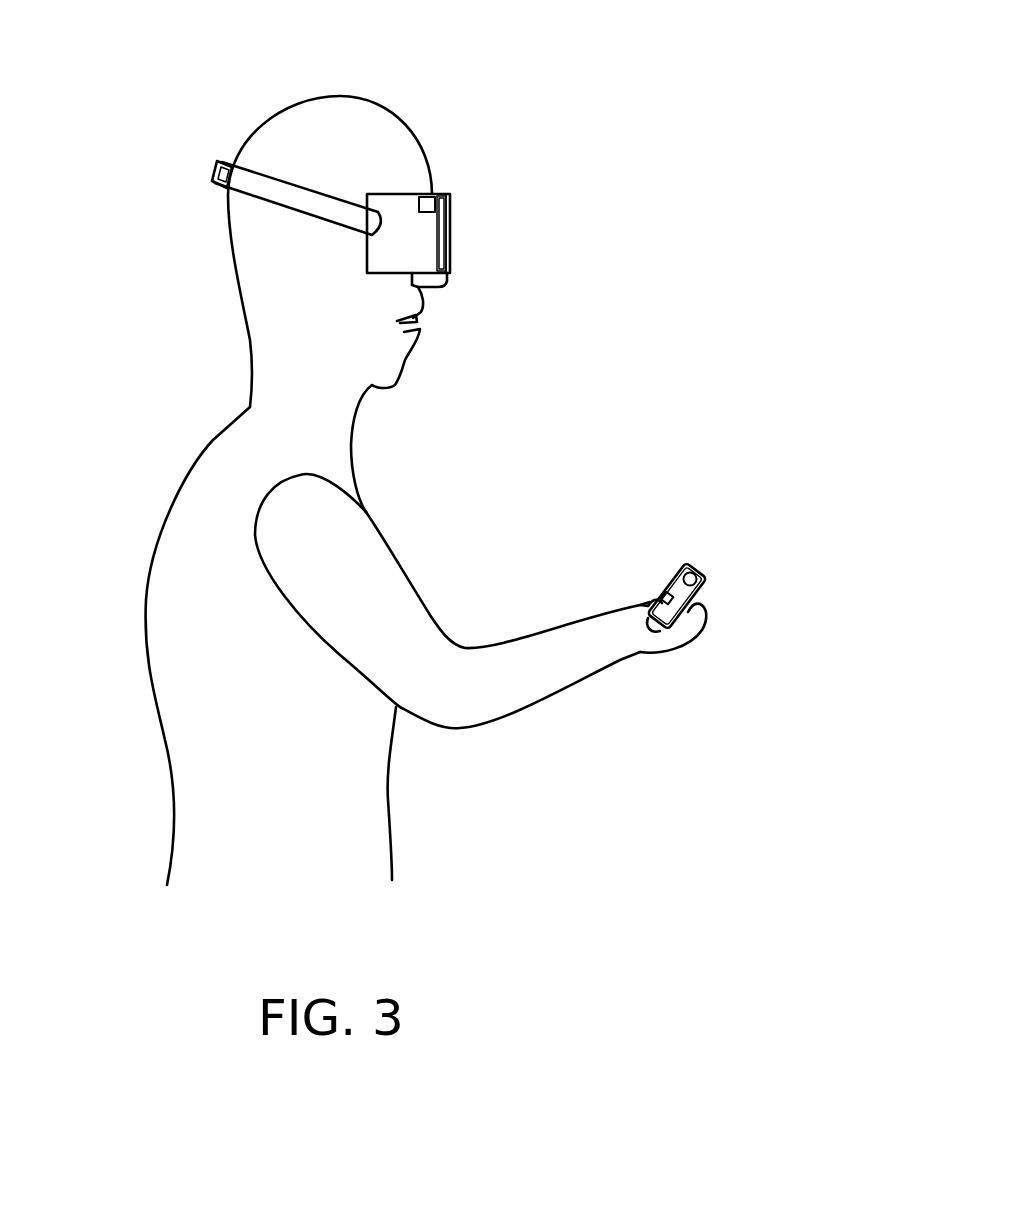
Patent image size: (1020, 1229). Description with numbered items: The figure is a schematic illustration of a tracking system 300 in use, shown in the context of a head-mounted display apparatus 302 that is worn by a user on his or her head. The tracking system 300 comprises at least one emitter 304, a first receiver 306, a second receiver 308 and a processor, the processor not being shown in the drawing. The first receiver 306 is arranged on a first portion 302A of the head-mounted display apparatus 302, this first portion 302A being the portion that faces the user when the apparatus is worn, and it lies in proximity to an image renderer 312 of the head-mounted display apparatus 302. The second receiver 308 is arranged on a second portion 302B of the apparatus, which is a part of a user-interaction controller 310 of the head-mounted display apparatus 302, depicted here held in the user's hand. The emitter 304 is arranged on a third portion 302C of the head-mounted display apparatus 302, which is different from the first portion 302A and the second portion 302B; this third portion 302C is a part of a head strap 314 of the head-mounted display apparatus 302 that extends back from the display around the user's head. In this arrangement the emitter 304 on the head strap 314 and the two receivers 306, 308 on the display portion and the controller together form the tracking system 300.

The tracking system 300 is at (606, 71).
The first portion 302A is at (465, 250).
The second portion 302B is at (668, 547).
The third portion 302C is at (205, 149).
The head-mounted display apparatus 302 is at (445, 200).
The emitter 304 is at (208, 187).
The first receiver 306 is at (432, 200).
The second receiver 308 is at (660, 601).
The user-interaction controller 310 is at (700, 566).
The image renderer 312 is at (443, 231).
The head strap 314 is at (250, 198).